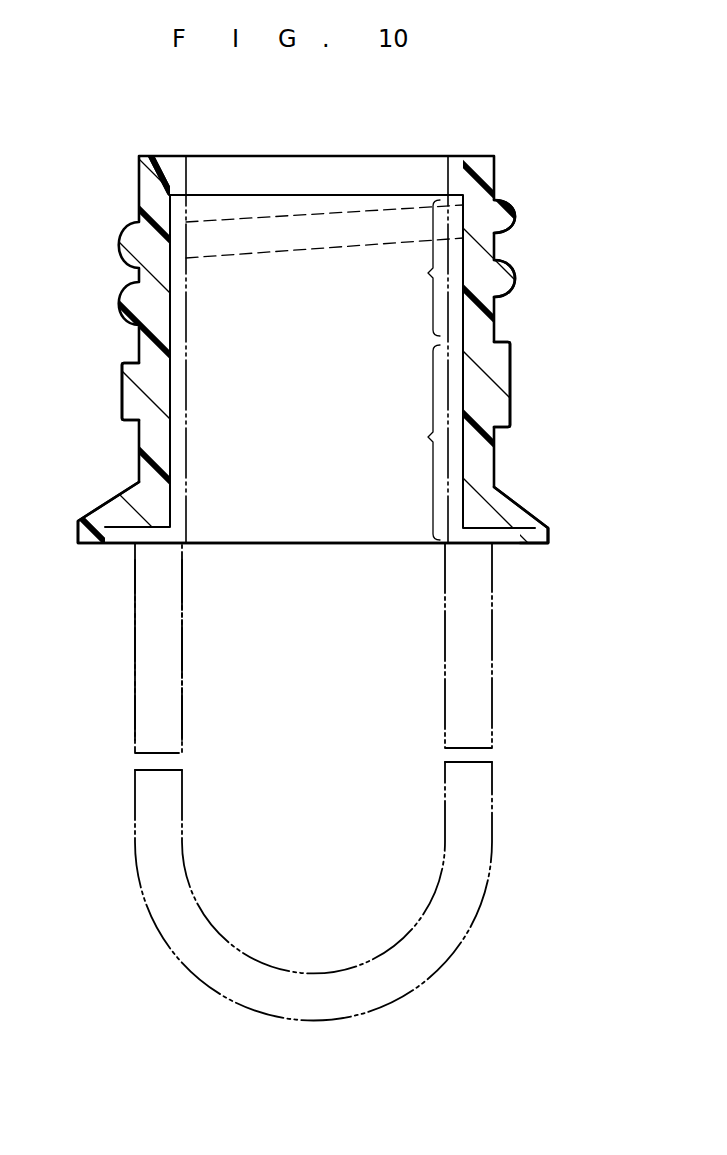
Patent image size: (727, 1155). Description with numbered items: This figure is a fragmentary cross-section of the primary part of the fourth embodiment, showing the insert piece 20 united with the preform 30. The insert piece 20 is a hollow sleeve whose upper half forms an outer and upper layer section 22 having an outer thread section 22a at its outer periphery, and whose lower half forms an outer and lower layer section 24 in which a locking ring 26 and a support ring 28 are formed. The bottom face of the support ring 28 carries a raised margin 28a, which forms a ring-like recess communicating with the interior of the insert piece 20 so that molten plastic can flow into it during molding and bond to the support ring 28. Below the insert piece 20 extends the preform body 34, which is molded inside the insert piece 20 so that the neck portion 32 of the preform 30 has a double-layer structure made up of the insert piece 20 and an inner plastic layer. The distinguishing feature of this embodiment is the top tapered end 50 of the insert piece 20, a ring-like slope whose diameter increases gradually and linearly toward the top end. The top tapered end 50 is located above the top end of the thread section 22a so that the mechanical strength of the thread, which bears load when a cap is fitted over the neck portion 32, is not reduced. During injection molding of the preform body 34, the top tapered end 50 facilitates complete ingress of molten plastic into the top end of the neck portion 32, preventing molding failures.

The insert piece 20 is at (110, 483).
The outer and upper layer section 22 is at (424, 290).
The outer thread section 22a is at (513, 217).
The outer and lower layer section 24 is at (414, 454).
The locking ring 26 is at (502, 377).
The support ring 28 is at (528, 512).
The raised margin of the support ring 28a is at (538, 543).
The preform 30 is at (502, 692).
The neck portion 32 is at (177, 370).
The preform body 34 is at (158, 652).
The top tapered end 50 is at (465, 196).